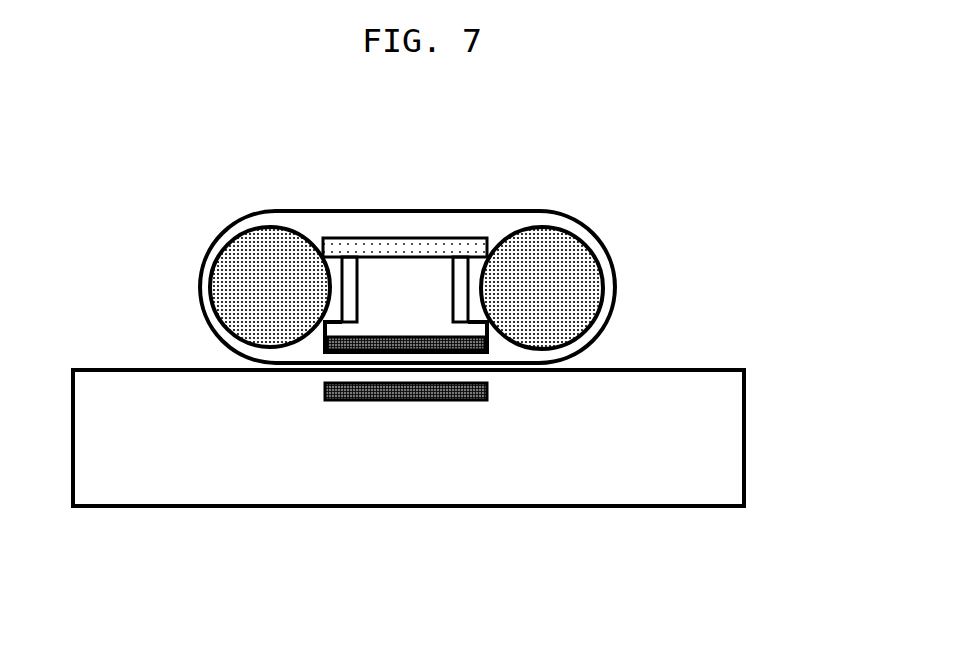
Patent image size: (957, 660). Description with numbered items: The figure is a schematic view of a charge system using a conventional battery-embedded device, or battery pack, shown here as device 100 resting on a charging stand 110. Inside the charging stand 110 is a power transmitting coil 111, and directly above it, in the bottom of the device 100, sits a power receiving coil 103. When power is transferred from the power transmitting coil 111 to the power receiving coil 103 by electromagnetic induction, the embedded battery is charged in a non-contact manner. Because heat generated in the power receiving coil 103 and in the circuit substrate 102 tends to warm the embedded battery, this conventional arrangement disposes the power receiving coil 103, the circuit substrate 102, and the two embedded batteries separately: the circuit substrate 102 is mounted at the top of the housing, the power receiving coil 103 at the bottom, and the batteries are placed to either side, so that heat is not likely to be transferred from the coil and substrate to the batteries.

The mobile robot / robot cleaner body 100 is at (515, 208).
The circuit substrate 102 is at (405, 237).
The power receiving coil 103 is at (340, 340).
The charging stand 110 is at (663, 397).
The power transmitting coil 111 is at (383, 401).